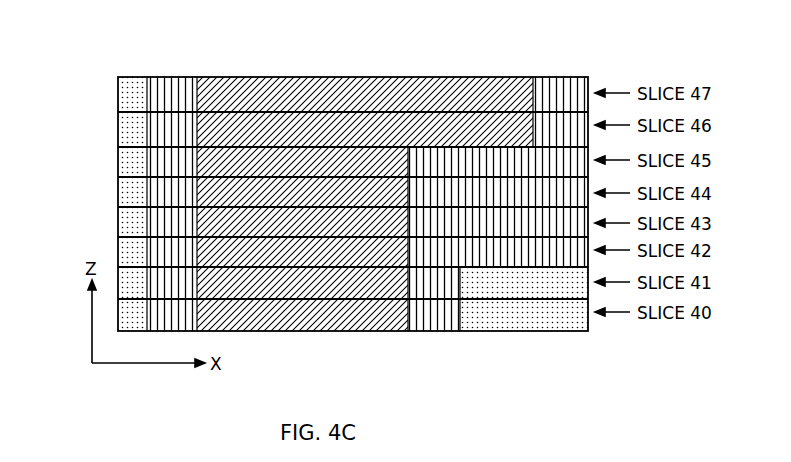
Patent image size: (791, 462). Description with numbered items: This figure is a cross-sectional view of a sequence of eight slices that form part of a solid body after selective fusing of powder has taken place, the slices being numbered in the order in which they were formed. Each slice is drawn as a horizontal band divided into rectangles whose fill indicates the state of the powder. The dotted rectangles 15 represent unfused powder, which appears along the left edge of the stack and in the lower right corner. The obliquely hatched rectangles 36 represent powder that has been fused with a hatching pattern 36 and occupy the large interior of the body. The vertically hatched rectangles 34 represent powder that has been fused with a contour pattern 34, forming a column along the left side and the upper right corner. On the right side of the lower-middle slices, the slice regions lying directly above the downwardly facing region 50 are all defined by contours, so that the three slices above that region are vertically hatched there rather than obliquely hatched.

The dotted rectangles 15 is at (128, 118).
The contour pattern 34 is at (167, 97).
The hatching pattern 36 is at (287, 93).
The downwardly facing region 50 is at (487, 253).